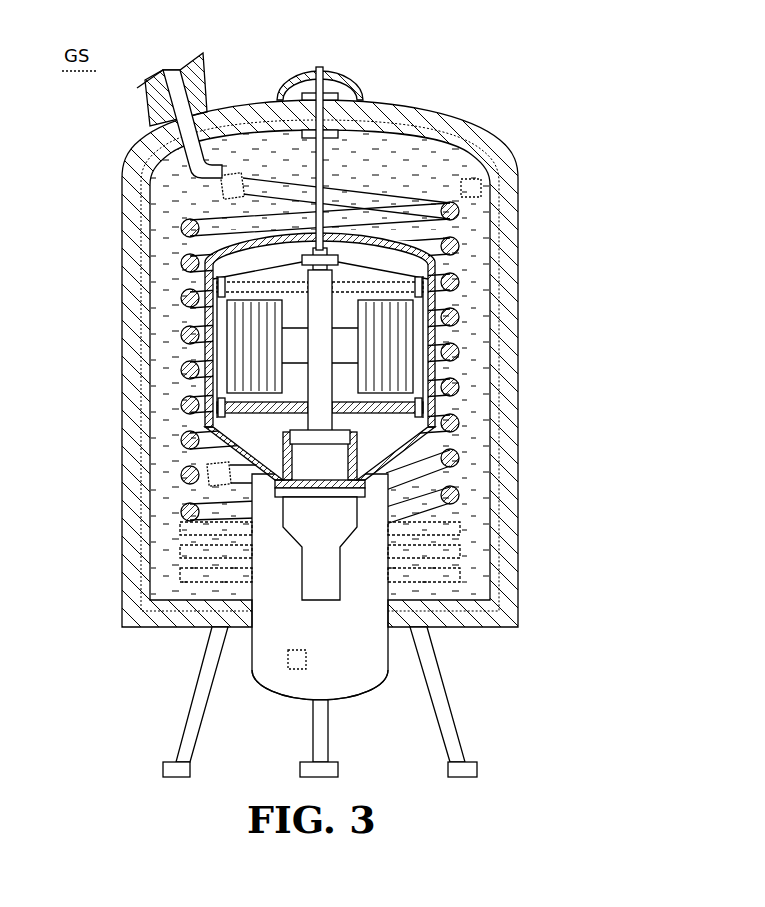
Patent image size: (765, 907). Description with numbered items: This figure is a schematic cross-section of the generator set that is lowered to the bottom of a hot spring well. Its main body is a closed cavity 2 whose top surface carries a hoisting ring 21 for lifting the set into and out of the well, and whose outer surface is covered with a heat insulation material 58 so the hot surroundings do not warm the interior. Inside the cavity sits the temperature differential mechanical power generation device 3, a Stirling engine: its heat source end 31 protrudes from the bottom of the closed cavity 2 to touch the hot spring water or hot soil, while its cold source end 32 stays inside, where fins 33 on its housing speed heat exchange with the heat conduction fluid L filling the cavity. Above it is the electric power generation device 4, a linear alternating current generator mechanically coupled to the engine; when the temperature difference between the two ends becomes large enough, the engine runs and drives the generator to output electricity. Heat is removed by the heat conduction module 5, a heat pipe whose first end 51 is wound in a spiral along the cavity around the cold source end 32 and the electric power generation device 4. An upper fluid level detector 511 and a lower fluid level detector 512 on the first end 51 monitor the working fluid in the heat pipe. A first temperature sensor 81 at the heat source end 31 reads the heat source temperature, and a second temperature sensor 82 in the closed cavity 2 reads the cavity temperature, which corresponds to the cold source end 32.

The closed cavity 2 is at (280, 352).
The hoisting ring 21 is at (342, 80).
The heat conduction module 5 is at (142, 119).
The upper fluid level detector 511 is at (226, 187).
The lower fluid level detector 512 is at (213, 476).
The second temperature sensor 82 is at (481, 188).
The first temperature sensor 81 is at (284, 670).
The heat conduction fluid L is at (168, 282).
The first end 51 is at (184, 371).
The electric power generation device 4 is at (442, 338).
The cold source end 32 is at (372, 510).
The fins 33 is at (455, 528).
The heat insulation material 58 is at (127, 549).
The temperature differential mechanical power generation device 3 is at (376, 625).
The heat source end 31 is at (358, 680).